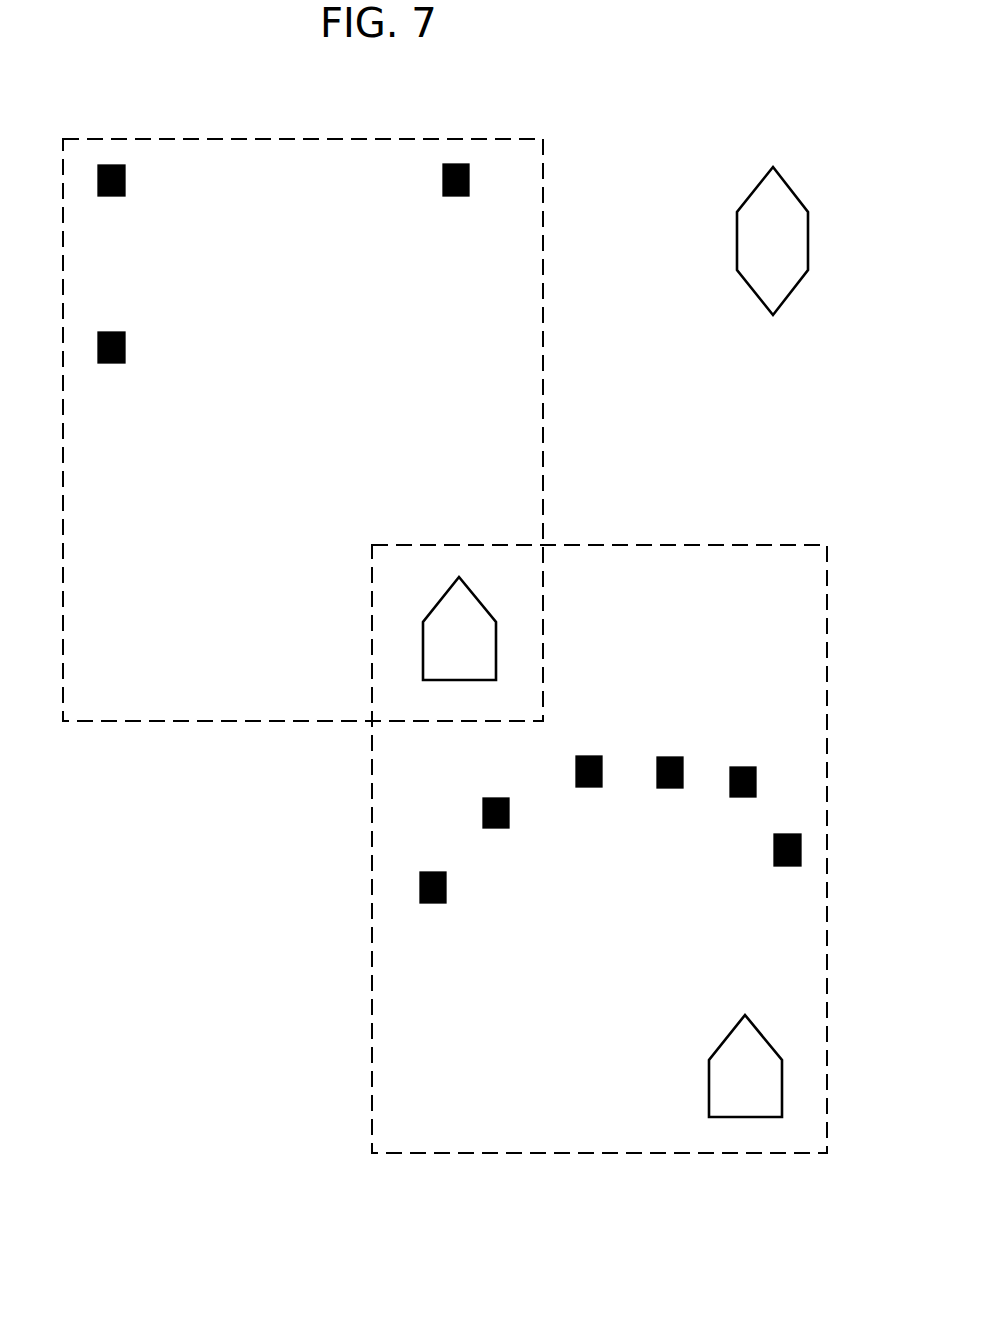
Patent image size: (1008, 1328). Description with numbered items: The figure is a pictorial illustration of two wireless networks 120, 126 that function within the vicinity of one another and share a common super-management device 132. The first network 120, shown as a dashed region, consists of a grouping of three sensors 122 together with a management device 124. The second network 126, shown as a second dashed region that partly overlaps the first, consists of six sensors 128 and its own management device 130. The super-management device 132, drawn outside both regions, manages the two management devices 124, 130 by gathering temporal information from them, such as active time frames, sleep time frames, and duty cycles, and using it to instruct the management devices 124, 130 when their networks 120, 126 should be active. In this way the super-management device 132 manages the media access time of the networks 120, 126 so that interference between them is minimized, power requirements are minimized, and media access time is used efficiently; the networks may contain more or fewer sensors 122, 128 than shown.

The first network 120 is at (197, 139).
The sensors 122 is at (110, 196).
The management device 124 is at (496, 643).
The second network 126 is at (716, 1153).
The sensors 128 is at (787, 834).
The management device 130 is at (709, 1083).
The super-management device 132 is at (808, 238).